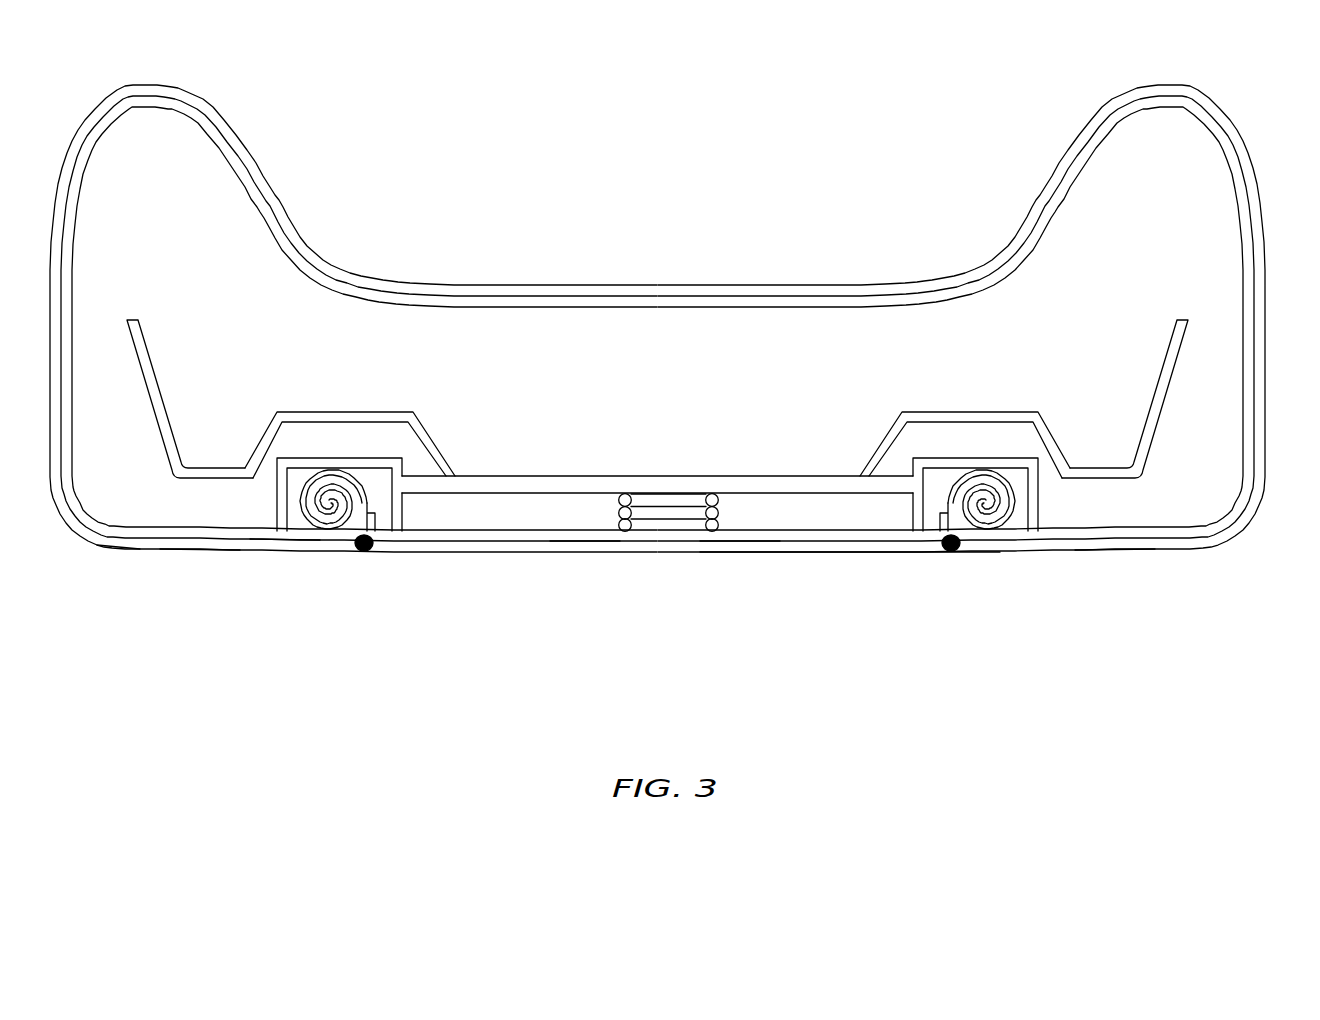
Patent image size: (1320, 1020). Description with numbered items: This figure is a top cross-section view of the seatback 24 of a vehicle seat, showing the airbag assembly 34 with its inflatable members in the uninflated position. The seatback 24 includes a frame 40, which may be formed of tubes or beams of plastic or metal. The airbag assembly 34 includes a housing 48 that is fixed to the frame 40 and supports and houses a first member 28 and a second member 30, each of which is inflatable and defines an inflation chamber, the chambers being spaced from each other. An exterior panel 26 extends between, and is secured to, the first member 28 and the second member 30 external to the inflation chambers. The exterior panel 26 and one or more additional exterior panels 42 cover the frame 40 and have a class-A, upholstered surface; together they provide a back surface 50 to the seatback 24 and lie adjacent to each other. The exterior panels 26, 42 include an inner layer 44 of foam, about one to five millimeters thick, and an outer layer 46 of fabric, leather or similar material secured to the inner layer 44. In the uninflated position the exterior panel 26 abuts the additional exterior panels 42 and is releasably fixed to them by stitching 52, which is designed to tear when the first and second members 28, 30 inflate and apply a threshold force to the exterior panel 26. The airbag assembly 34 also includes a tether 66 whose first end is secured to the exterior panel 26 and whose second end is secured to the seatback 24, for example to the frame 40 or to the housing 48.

The seatback 24 is at (1255, 177).
The exterior panel 26 is at (860, 553).
The first member 28 is at (317, 527).
The second member 30 is at (994, 515).
The airbag assembly 34 is at (936, 650).
The frame 40 is at (318, 412).
The additional exterior panels 42 is at (197, 549).
The inner layer 44 is at (548, 537).
The outer layer 46 is at (117, 540).
The housing 48 is at (365, 458).
The back surface 50 is at (270, 550).
The stitching 52 is at (370, 538).
The tether 66 is at (724, 505).